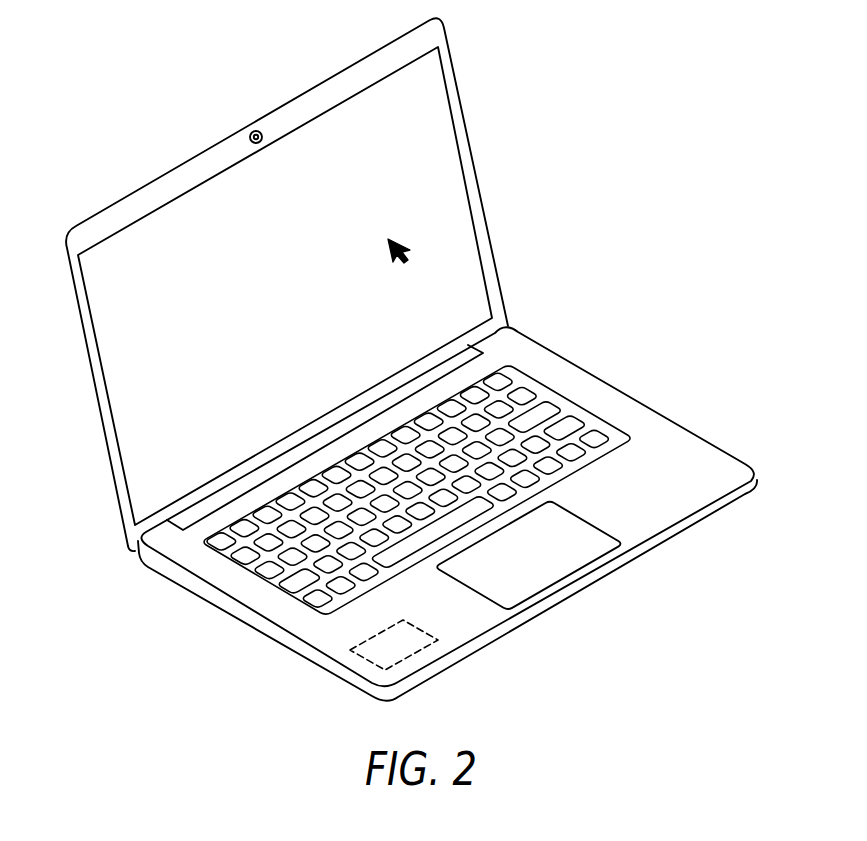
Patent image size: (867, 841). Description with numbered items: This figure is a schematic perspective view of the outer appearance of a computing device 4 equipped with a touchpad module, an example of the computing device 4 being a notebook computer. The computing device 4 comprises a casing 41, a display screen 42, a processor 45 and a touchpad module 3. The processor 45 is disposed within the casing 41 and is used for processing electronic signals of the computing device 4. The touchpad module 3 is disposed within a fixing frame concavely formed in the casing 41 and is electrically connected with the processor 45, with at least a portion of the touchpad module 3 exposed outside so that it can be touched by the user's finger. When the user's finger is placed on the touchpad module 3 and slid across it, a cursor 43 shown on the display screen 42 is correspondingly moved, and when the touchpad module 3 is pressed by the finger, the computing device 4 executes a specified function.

The computing device 4 is at (642, 160).
The casing 41 is at (687, 466).
The display screen 42 is at (440, 108).
The cursor 43 is at (405, 242).
The touchpad module 3 is at (532, 562).
The processor 45 is at (382, 655).